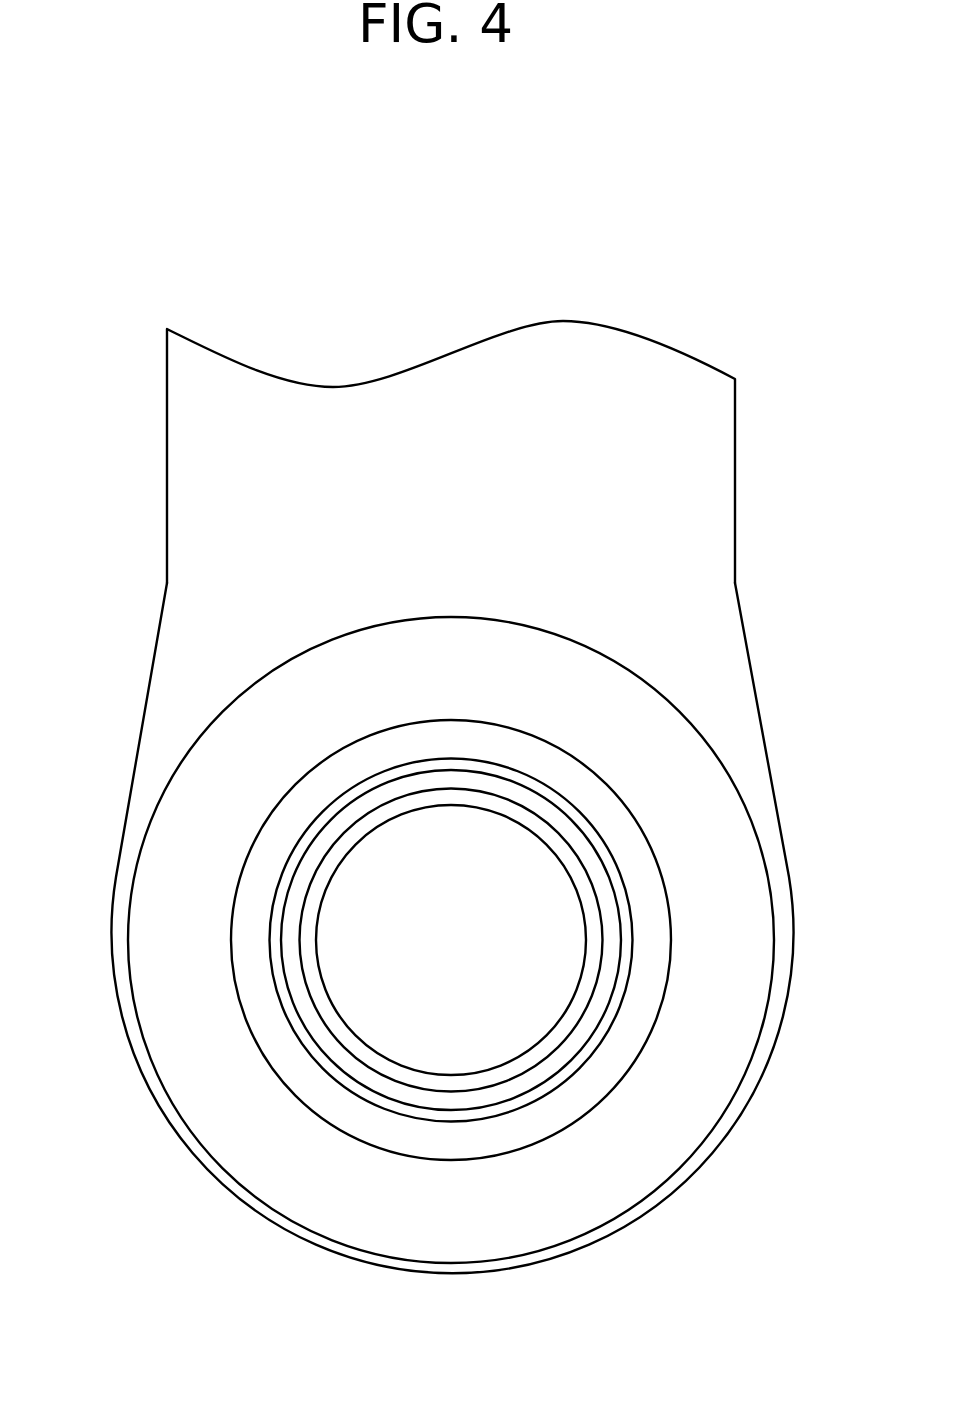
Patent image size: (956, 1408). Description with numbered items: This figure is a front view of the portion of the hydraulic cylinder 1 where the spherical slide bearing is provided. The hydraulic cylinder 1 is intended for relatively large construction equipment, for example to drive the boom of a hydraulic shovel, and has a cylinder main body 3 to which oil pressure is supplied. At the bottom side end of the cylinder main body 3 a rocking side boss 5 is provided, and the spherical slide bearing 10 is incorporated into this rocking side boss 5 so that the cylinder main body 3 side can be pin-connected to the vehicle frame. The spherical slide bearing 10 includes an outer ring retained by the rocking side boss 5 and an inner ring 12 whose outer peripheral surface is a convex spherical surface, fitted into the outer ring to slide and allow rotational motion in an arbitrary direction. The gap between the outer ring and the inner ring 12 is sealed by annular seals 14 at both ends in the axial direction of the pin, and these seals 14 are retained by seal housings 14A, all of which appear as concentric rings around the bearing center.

The hydraulic cylinder 1 is at (135, 413).
The cylinder main body 3 is at (195, 355).
The rocking side boss 5 is at (345, 1225).
The spherical slide bearing 10 is at (255, 983).
The inner ring 12 is at (292, 902).
The seal 14 is at (369, 1105).
The seal housing 14A is at (329, 1108).